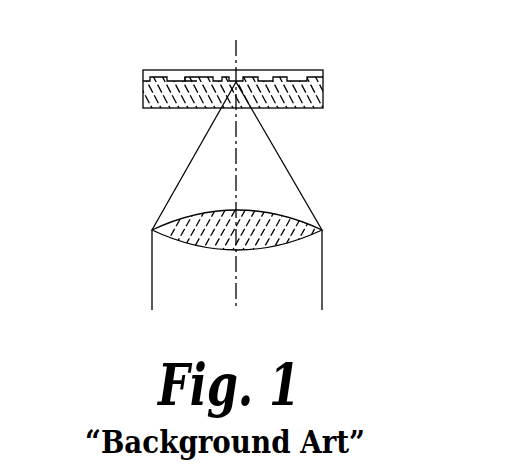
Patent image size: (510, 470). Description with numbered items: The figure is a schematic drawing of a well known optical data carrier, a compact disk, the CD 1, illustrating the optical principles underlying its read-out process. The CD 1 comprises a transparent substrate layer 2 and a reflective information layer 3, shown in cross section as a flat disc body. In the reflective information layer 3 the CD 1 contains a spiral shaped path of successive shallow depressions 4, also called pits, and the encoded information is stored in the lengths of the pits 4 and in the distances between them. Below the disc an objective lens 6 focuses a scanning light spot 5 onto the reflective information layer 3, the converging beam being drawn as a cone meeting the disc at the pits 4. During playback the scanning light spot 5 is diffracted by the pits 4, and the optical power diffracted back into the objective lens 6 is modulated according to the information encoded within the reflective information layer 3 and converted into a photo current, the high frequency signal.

The CD 1 is at (261, 85).
The transparent substrate layer 2 is at (147, 107).
The reflective information layer 3 is at (146, 78).
The shallow depressions 4 is at (192, 78).
The scanning light spot 5 is at (180, 182).
The objective lens 6 is at (265, 249).